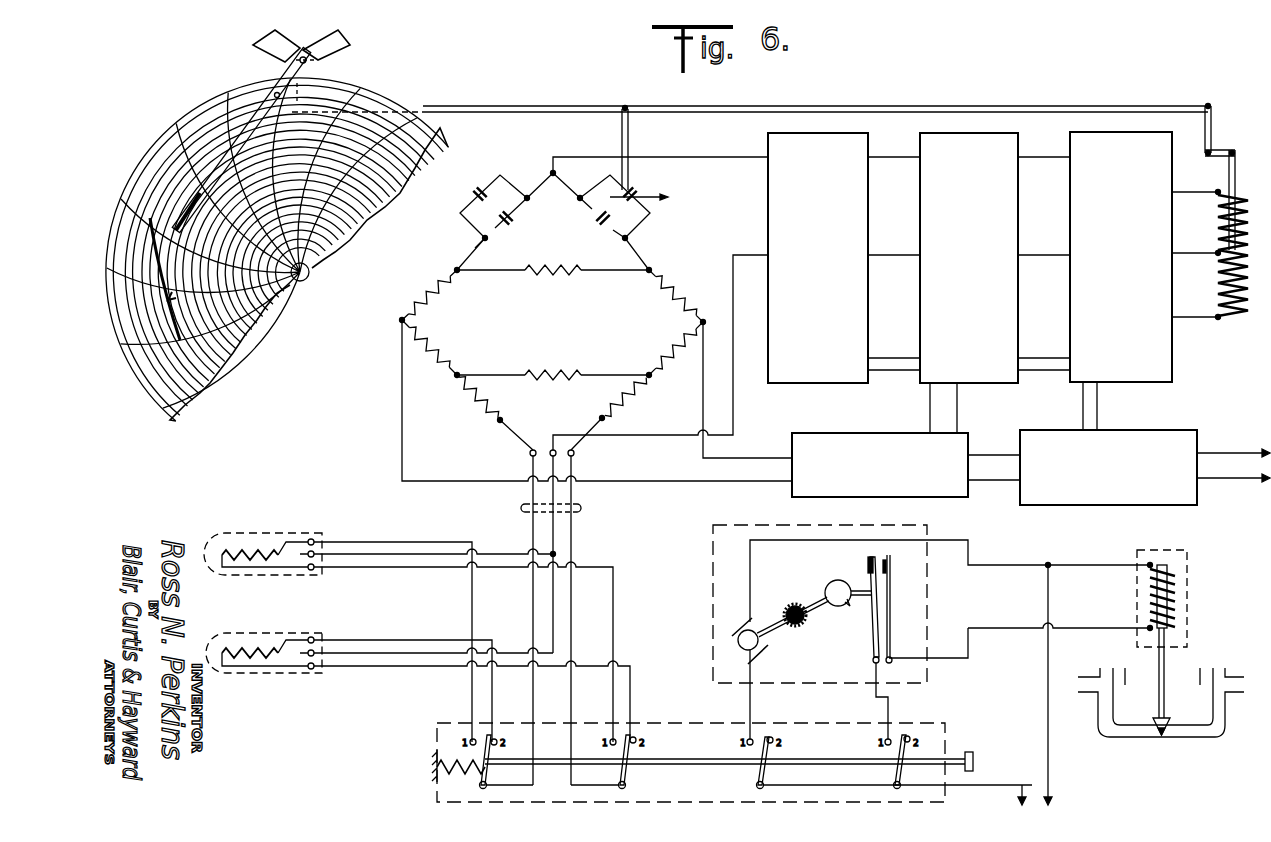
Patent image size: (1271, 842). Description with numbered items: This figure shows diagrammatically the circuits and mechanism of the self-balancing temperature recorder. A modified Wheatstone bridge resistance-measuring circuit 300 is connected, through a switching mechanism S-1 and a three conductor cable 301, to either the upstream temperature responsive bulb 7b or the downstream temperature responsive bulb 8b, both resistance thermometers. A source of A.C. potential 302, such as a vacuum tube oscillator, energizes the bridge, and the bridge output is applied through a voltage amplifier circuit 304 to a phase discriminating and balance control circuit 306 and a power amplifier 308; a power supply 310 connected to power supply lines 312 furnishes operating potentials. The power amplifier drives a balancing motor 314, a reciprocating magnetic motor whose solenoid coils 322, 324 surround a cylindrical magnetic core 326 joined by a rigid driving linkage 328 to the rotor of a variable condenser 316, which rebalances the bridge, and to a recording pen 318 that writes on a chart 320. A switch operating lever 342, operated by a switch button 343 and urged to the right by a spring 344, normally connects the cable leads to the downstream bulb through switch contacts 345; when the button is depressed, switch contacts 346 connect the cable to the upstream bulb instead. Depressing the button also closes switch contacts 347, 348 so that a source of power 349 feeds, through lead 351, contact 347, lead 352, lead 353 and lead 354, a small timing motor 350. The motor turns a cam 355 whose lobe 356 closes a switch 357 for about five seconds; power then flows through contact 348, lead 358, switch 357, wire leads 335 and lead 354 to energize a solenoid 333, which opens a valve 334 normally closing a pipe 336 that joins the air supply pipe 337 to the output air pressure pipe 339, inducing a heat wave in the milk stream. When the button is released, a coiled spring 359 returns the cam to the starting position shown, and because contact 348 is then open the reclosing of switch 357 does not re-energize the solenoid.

The recording pen 318 is at (235, 153).
The chart 320 is at (133, 382).
The rigid driving linkage 328 is at (915, 106).
The variable condenser 316 is at (641, 192).
The Wheatstone bridge resistance-measuring circuit 300 is at (560, 328).
The voltage amplifier circuit 304 is at (800, 259).
The phase discriminating and balance control circuit 306 is at (952, 259).
The power amplifier 308 is at (1103, 257).
The source of A.C. potential 302 is at (847, 477).
The power supply 310 is at (1085, 477).
The power supply lines 312 is at (1220, 477).
The solenoid coil 324 is at (1217, 196).
The cylindrical magnetic core 326 is at (1216, 257).
The solenoid coil 322 is at (1216, 300).
The balancing motor 314 is at (1238, 320).
The three conductor cable 301 is at (578, 509).
The upstream temperature responsive bulb 7b is at (262, 533).
The downstream temperature responsive bulb 8b is at (265, 673).
The switching mechanism S-1 is at (437, 790).
The spring 344 is at (450, 758).
The switch contacts 346 is at (469, 738).
The switch contacts 345 is at (497, 738).
The switch operating lever 342 is at (683, 764).
The switch button 343 is at (972, 752).
The lead 351 is at (825, 785).
The source of power 349 is at (1032, 782).
The switch contact 347 is at (768, 737).
The switch contact 348 is at (905, 735).
The lead 352 is at (746, 698).
The lead 358 is at (876, 697).
The lead 353 is at (970, 560).
The motor 350 is at (733, 650).
The cam 355 is at (831, 585).
The coiled spring 359 is at (790, 606).
The lobe 356 is at (836, 607).
The switch 357 is at (928, 566).
The wire leads 335 is at (1091, 565).
The lead 354 is at (1046, 686).
The solenoid 333 is at (1238, 556).
The valve 334 is at (1164, 737).
The pipe 336 is at (1122, 737).
The output air pressure pipe 339 is at (1085, 690).
The air supply pipe 337 is at (1237, 690).